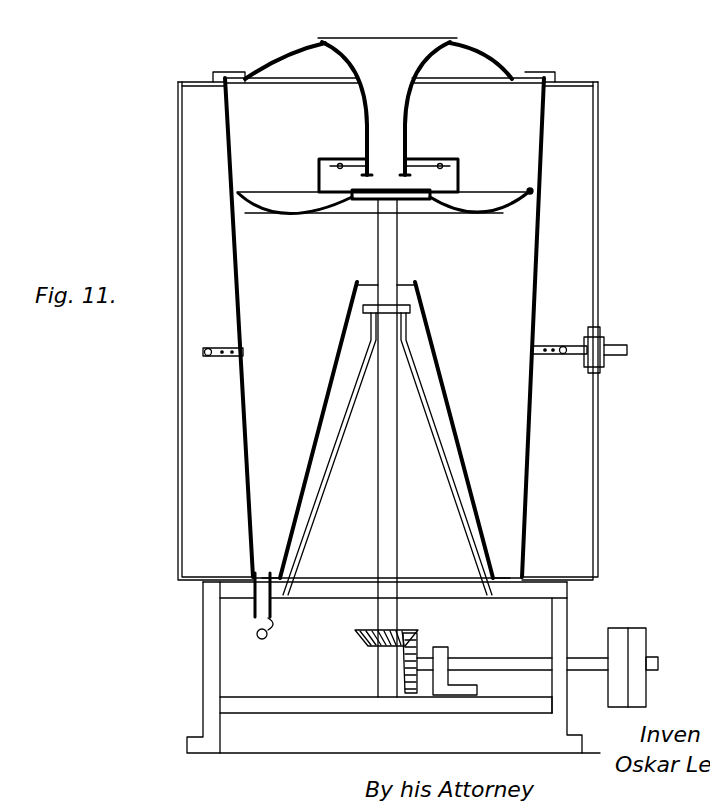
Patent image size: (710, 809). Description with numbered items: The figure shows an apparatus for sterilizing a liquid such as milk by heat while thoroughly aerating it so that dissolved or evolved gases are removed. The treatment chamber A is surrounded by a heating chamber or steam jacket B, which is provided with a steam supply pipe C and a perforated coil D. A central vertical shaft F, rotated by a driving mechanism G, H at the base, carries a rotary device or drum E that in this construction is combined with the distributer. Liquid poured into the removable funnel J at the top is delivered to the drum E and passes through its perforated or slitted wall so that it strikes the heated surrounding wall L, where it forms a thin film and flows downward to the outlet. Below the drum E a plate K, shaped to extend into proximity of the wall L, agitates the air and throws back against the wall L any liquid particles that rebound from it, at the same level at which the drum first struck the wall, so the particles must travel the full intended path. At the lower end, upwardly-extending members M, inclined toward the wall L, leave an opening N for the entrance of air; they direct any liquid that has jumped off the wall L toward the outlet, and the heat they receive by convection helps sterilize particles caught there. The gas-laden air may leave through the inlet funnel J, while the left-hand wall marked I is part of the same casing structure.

The funnel J is at (410, 46).
The rotary device (drum) E is at (443, 163).
The heated surrounding wall L is at (540, 143).
The inner casing wall (lower) I is at (247, 463).
The plate K is at (478, 215).
The heating chamber (steam jacket) B is at (388, 331).
The treatment chamber A is at (384, 178).
The opening N is at (410, 280).
The perforated coil D is at (208, 348).
The steam supply pipe C is at (610, 347).
The upwardly-extending members M is at (325, 401).
The shaft F is at (390, 492).
The driving mechanism (gearing) G is at (400, 627).
The driving mechanism (pulley) H is at (636, 633).